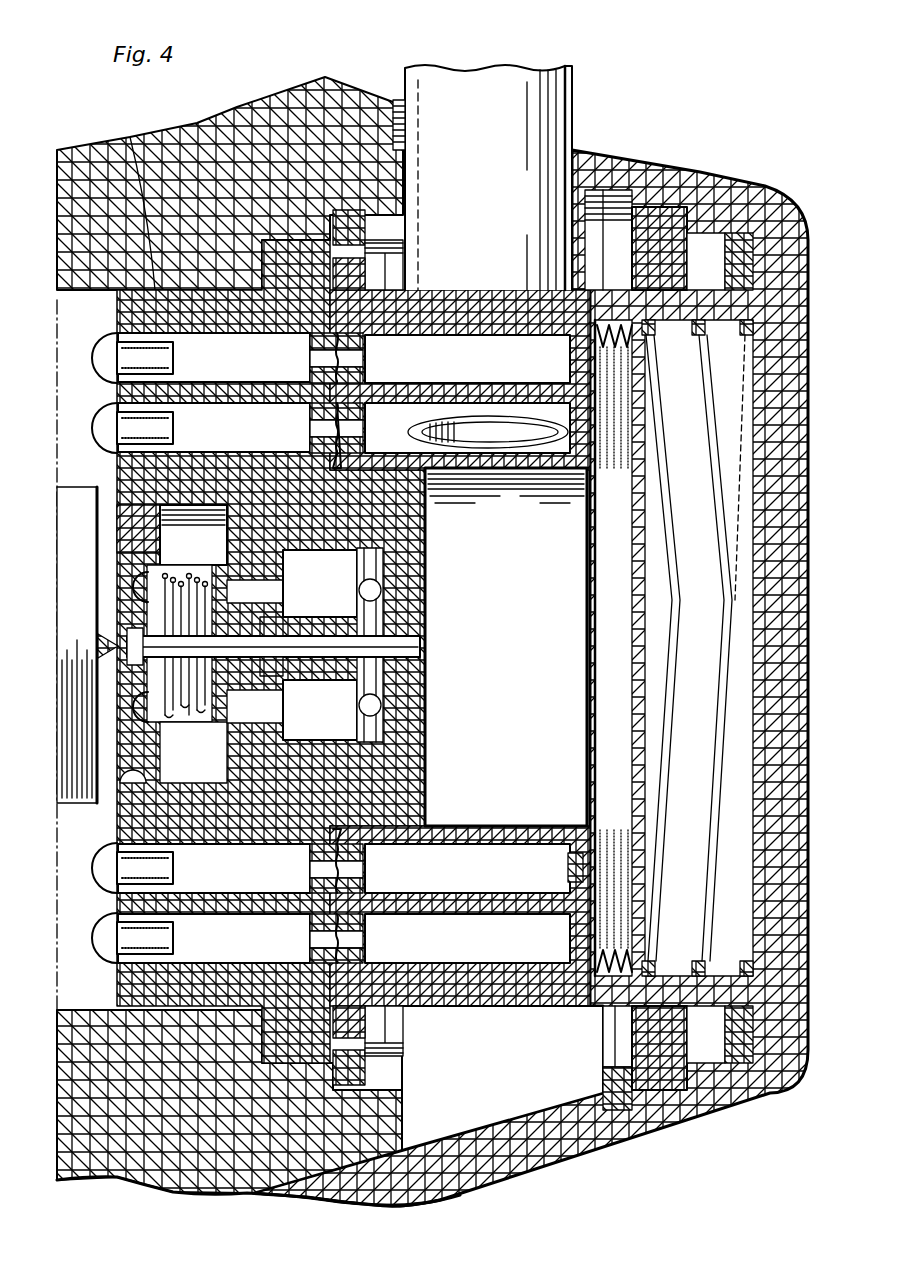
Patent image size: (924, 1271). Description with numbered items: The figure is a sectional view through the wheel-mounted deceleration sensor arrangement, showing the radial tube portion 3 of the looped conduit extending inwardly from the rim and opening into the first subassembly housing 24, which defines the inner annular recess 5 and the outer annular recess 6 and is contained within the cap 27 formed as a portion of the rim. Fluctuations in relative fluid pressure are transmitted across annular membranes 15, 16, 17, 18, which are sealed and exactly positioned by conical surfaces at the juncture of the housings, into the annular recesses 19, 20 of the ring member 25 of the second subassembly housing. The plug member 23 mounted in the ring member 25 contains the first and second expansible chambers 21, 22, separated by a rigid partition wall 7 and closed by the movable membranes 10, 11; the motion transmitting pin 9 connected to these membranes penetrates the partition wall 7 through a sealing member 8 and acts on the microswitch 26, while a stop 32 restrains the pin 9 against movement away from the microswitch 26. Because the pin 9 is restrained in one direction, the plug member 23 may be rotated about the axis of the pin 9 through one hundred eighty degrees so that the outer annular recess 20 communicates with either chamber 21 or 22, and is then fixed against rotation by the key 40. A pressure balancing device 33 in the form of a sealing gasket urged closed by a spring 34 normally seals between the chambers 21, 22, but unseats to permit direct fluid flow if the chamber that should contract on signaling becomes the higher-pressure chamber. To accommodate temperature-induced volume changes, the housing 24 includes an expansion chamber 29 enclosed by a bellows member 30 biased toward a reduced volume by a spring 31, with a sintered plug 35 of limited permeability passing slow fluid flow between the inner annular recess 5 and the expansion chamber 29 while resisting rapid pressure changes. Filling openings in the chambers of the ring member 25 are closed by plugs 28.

The radial tube portion 3 is at (515, 120).
The inner annular recess 5 is at (396, 447).
The outer annular recess 6 is at (486, 377).
The partition wall 7 is at (283, 692).
The sealing member 8 is at (280, 670).
The motion transmitting pin 9 is at (377, 660).
The membrane 10 is at (382, 592).
The membrane 11 is at (127, 598).
The annular membrane 15 is at (365, 417).
The annular membrane 16 is at (350, 368).
The annular membrane 17 is at (333, 356).
The annular membrane 18 is at (333, 425).
The annular recess 19 is at (250, 447).
The outer annular recess 20 is at (246, 376).
The first expansible chamber 21 is at (206, 561).
The second expansible chamber 22 is at (331, 607).
The plug member 23 is at (130, 522).
The first subassembly housing 24 is at (663, 223).
The ring member 25 is at (125, 142).
The microswitch 26 is at (88, 596).
The cap 27 is at (677, 183).
The plug 28 is at (110, 420).
The expansion chamber 29 is at (519, 647).
The bellows member 30 is at (617, 362).
The spring 31 is at (728, 262).
The stop 32 is at (337, 645).
The pressure balancing device 33 is at (217, 727).
The spring 34 is at (178, 717).
The sintered plug 35 is at (567, 865).
The key 40 is at (133, 784).